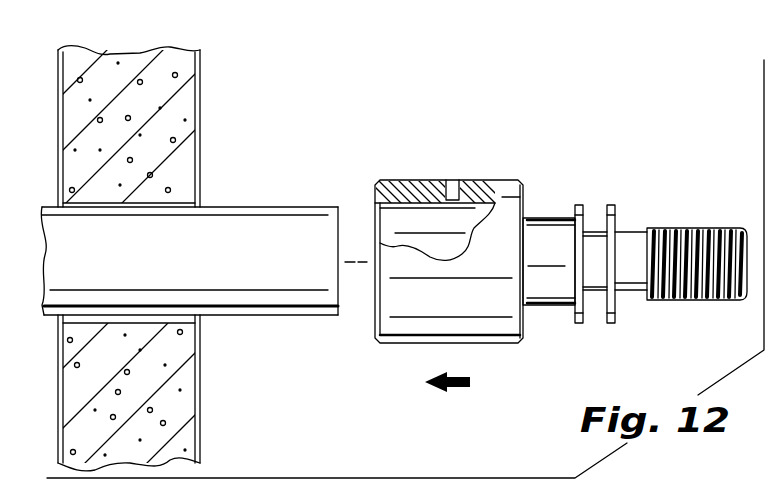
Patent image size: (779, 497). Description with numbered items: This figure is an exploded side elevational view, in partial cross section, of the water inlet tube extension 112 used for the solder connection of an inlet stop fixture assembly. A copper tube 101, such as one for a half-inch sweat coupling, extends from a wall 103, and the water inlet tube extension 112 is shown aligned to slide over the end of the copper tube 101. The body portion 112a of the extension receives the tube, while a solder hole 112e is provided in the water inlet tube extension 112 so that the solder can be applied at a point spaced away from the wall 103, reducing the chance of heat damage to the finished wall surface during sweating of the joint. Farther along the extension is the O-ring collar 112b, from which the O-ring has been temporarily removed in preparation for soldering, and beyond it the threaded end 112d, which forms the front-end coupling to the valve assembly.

The copper tube 101 is at (230, 252).
The wall 103 is at (202, 112).
The water inlet tube extension 112 is at (550, 246).
The coupling body 112a is at (438, 257).
The O-ring collar 112b is at (594, 193).
The threaded end 112d is at (697, 228).
The solder hole 112e is at (453, 170).